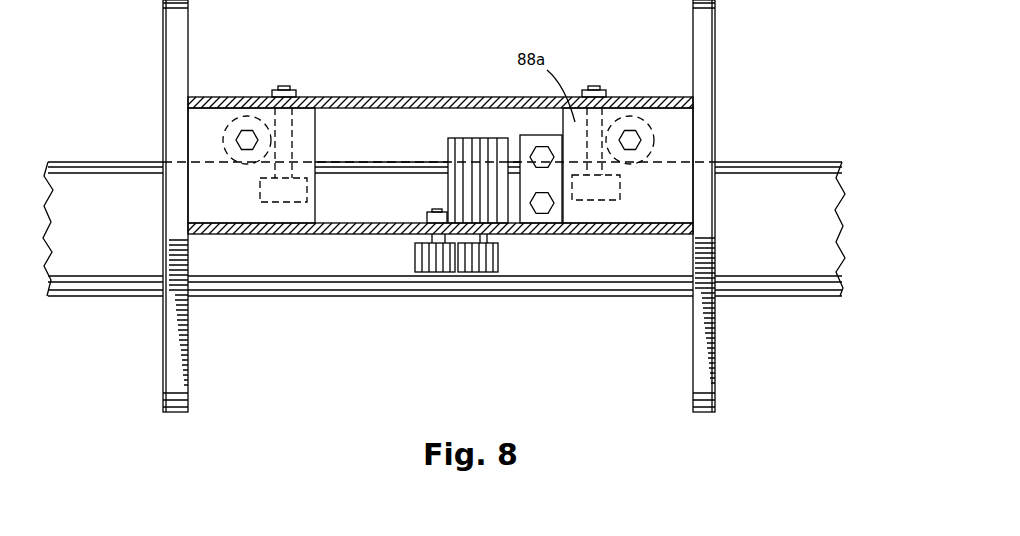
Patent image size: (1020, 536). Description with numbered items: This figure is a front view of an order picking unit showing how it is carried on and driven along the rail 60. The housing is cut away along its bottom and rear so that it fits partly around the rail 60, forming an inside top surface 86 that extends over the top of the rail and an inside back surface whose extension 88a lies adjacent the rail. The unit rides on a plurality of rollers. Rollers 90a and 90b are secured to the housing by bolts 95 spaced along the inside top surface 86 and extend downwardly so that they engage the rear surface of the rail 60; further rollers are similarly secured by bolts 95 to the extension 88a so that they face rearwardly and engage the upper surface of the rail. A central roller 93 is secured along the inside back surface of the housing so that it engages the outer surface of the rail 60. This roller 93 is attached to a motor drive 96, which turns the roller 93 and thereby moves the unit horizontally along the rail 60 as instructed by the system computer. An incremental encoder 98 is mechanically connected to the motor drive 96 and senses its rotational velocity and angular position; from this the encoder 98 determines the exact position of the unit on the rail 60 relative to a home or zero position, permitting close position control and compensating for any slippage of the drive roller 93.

The rail 60 is at (780, 176).
The inside top surface 86 is at (422, 97).
The extension of inside back surface 88a is at (302, 122).
The roller 90a is at (270, 202).
The roller 90b is at (620, 200).
The roller 93 is at (418, 272).
The bolts 95 is at (248, 136).
The motor drive 96 is at (485, 272).
The incremental encoder 98 is at (542, 160).